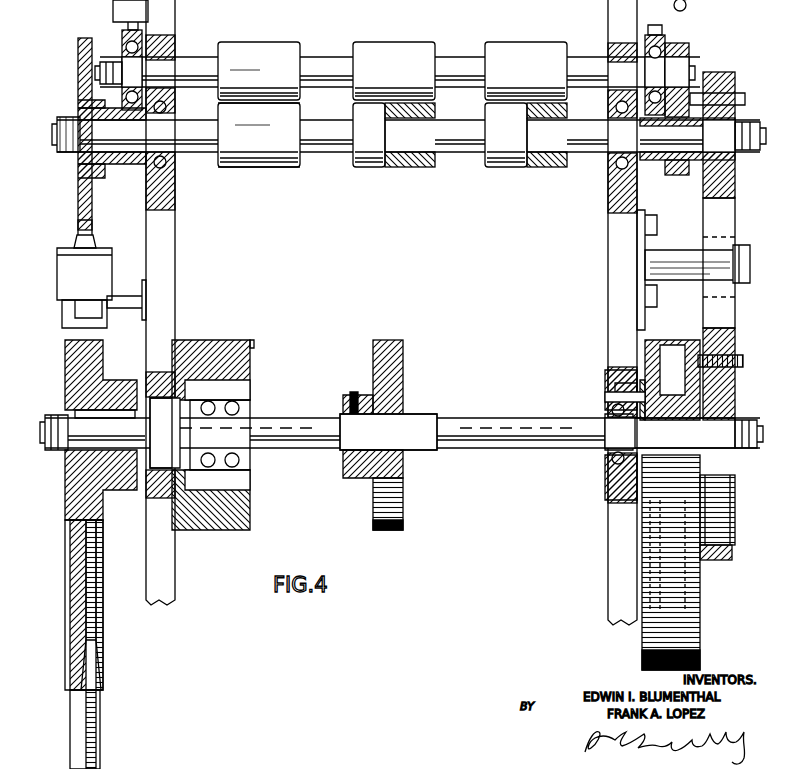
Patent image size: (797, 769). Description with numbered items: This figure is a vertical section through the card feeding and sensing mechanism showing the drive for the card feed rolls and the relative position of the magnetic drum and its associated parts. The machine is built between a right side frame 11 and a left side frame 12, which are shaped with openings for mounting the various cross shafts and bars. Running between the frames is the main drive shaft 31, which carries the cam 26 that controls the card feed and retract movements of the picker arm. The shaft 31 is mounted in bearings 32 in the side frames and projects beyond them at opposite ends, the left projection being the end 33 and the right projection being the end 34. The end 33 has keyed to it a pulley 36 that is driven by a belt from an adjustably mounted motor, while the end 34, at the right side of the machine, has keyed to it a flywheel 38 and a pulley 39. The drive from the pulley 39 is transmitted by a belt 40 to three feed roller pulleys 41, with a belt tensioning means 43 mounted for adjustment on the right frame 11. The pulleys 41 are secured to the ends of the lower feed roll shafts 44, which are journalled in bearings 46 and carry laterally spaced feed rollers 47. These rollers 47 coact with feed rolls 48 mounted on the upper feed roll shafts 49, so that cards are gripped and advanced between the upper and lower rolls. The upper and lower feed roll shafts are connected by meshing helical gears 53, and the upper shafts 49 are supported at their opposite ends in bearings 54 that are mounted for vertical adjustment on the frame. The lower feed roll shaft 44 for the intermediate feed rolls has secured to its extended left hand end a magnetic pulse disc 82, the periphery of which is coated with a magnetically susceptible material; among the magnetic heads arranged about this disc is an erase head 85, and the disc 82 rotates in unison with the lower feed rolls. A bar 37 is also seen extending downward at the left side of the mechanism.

The right side frame 11 is at (617, 258).
The left side frame 12 is at (170, 272).
The cam 26 is at (397, 378).
The main drive shaft 31 is at (515, 415).
The bearings 32 is at (150, 473).
The shaft end 33 is at (92, 452).
The shaft end 34 is at (717, 430).
The pulley 36 is at (65, 600).
The bar 37 is at (78, 720).
The flywheel 38 is at (695, 641).
The pulley 39 is at (720, 516).
The belt 40 is at (718, 314).
The feed roller pulleys 41 is at (735, 178).
The belt tensioning means 43 is at (704, 250).
The lower feed roll shafts 44 is at (336, 150).
The bearings 46 is at (608, 170).
The feed rollers 47 is at (232, 167).
The feed rolls 48 is at (276, 44).
The upper feed roll shafts 49 is at (458, 60).
The helical gears 53 is at (690, 50).
The bearings 54 is at (120, 42).
The magnetic pulse disc 82 is at (78, 58).
The erase head 85 is at (65, 271).